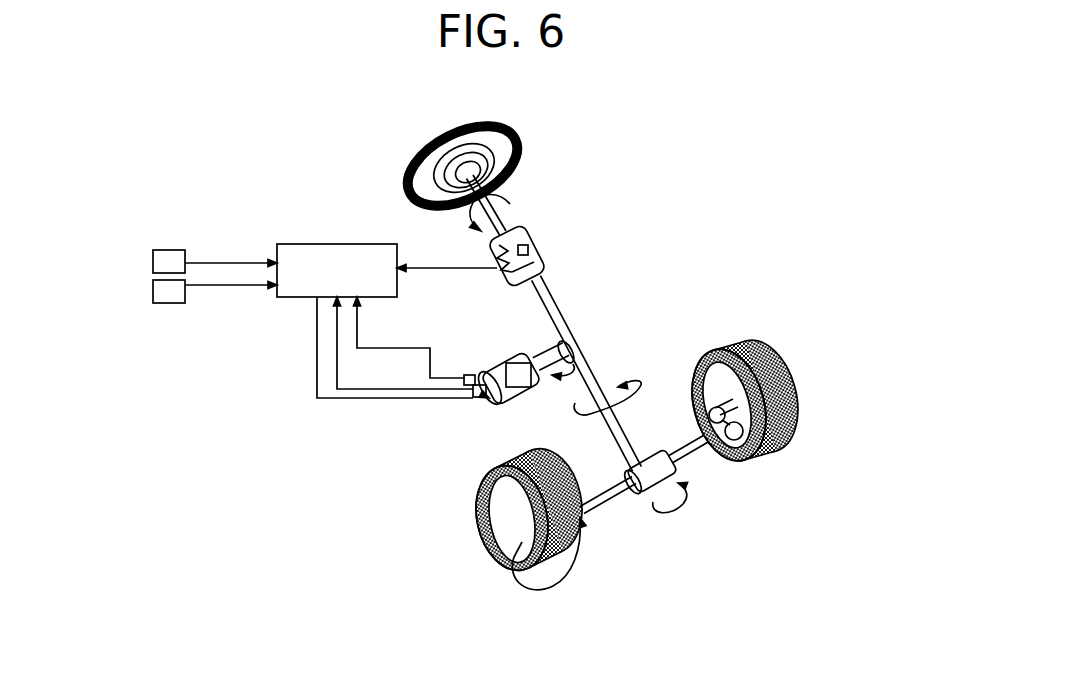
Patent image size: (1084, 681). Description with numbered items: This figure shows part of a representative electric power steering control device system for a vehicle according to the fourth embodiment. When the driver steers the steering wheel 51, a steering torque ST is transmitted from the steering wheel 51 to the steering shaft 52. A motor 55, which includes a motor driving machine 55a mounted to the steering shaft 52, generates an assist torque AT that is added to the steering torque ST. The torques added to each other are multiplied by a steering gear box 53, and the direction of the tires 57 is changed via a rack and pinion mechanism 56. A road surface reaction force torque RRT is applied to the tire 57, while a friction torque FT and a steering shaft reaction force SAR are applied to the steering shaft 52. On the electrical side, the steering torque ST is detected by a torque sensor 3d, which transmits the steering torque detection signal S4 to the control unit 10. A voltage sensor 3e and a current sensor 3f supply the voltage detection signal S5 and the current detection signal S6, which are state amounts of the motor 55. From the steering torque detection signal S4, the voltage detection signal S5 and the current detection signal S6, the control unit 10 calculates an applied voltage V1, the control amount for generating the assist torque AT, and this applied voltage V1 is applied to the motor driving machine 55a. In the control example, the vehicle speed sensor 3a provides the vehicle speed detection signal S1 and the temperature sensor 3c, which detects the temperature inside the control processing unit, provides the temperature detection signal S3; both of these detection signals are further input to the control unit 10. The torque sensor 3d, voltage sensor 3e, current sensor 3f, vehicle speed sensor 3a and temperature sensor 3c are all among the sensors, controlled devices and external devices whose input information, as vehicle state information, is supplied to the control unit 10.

The control unit 10 is at (310, 244).
The vehicle speed sensor 3a is at (178, 250).
The temperature sensor 3c is at (165, 303).
The torque sensor 3d is at (531, 244).
The voltage sensor 3e is at (467, 375).
The current sensor 3f is at (476, 385).
The steering wheel 51 is at (470, 121).
The steering shaft 52 is at (590, 361).
The steering gear box 53 is at (672, 507).
The motor 55 is at (489, 398).
The motor driving machine 55a is at (541, 388).
The rack and pinion mechanism 56 is at (610, 497).
The tire 57 is at (777, 458).
The vehicle speed detection signal S1 is at (248, 262).
The temperature detection signal S3 is at (245, 287).
The steering torque detection signal S4 is at (437, 267).
The voltage detection signal S5 is at (438, 380).
The current detection signal S6 is at (365, 389).
The applied voltage V1 is at (316, 399).
The steering torque ST is at (510, 205).
The assist torque AT is at (546, 320).
The steering shaft reaction force SAR is at (641, 384).
The friction torque FT is at (688, 501).
The road surface reaction force torque RRT is at (529, 536).